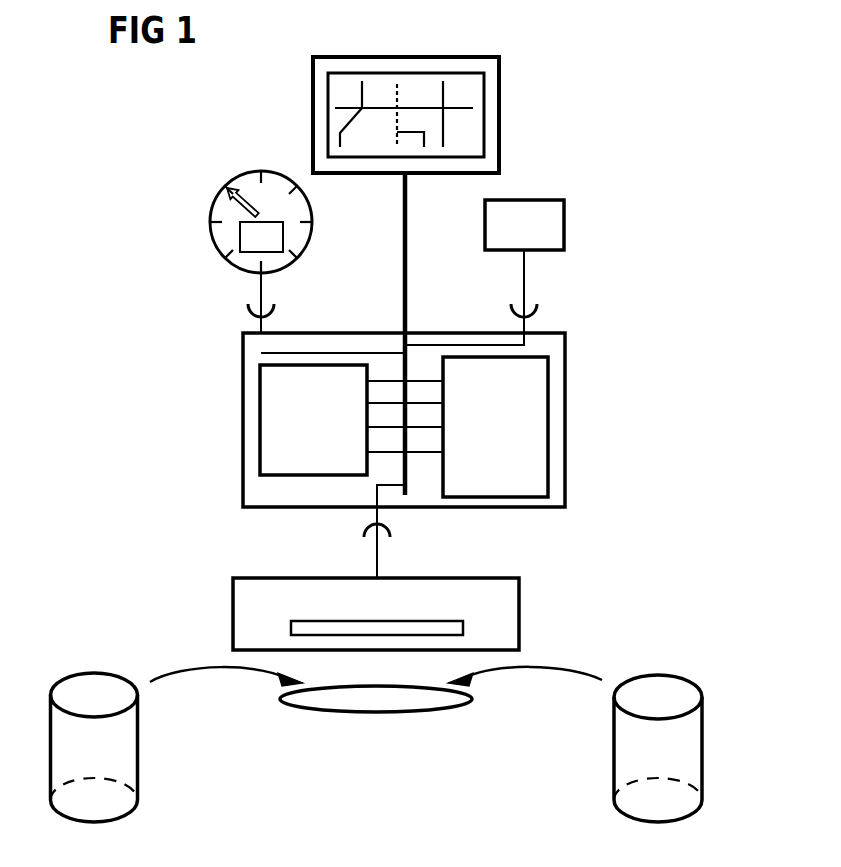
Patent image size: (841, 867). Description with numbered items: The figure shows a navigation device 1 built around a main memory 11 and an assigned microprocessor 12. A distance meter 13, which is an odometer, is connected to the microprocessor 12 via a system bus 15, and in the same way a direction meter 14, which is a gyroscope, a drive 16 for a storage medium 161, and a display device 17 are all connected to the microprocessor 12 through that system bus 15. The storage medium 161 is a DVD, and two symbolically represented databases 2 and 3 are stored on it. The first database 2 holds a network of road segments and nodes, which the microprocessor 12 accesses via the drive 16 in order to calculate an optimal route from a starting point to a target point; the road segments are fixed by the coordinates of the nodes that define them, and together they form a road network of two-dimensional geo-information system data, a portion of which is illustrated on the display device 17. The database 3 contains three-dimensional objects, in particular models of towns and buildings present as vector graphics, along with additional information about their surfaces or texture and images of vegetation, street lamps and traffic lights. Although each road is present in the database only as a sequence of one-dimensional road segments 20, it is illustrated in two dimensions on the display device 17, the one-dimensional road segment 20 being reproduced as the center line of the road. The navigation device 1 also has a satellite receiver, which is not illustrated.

The navigation device 1 is at (133, 472).
The first database 2 is at (137, 743).
The second database 3 is at (702, 745).
The main memory 11 is at (258, 430).
The microprocessor 12 is at (550, 430).
The distance meter 13 is at (210, 237).
The direction meter 14 is at (565, 218).
The system bus 15 is at (403, 343).
The drive 16 is at (519, 607).
The display device 17 is at (500, 102).
The road segment 20 is at (417, 107).
The storage medium 161 is at (375, 713).